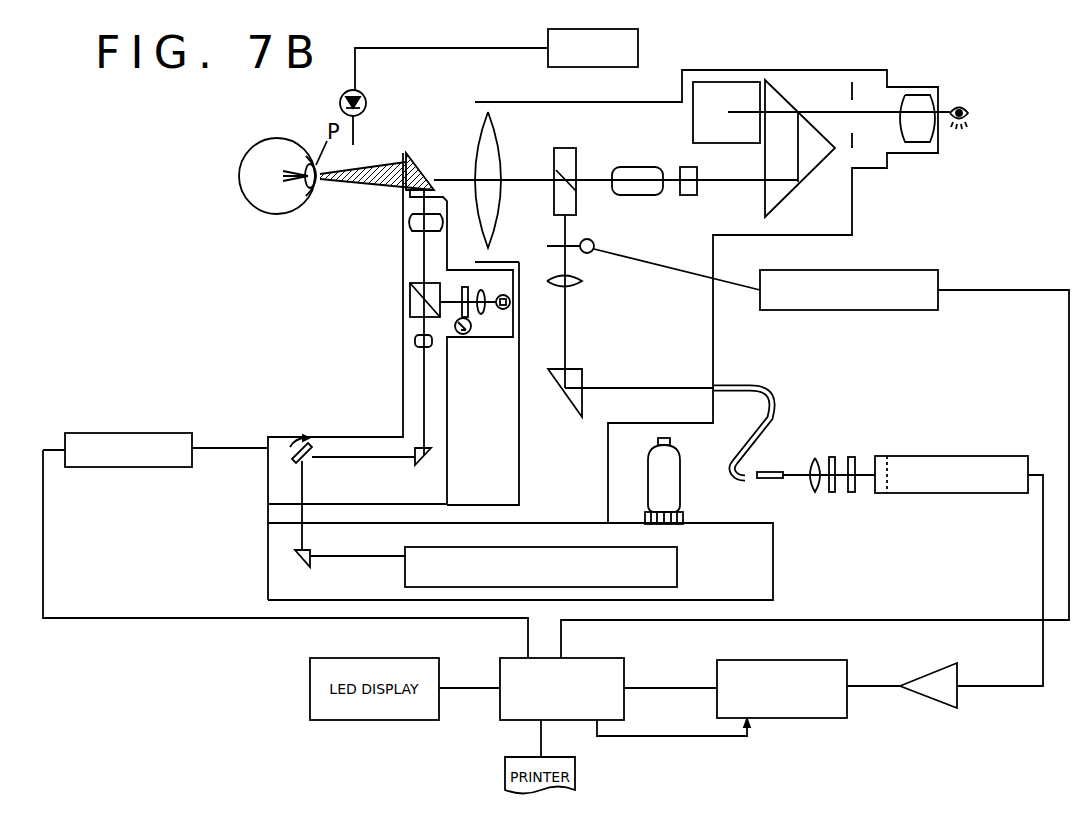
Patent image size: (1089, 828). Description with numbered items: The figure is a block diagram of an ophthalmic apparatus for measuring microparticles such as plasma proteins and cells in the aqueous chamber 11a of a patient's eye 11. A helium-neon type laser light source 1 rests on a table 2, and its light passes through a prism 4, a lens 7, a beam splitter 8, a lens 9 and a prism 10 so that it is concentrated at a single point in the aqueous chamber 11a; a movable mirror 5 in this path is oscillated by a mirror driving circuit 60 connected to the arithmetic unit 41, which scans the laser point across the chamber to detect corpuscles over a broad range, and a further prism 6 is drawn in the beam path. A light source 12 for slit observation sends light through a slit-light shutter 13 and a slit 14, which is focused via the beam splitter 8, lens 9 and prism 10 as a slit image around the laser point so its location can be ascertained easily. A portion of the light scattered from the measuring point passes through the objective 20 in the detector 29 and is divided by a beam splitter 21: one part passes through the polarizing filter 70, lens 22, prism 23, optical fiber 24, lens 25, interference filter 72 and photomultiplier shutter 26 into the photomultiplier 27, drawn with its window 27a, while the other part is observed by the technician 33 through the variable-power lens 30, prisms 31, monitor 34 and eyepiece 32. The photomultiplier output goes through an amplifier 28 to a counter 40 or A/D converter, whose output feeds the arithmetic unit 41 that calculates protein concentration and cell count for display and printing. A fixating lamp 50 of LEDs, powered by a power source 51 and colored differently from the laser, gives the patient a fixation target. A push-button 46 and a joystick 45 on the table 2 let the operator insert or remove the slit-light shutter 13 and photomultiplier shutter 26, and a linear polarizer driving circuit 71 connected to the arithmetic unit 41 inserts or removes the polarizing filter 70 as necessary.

The laser light source 1 is at (678, 566).
The table 2 is at (773, 558).
The prism 4 is at (295, 553).
The movable mirror 5 is at (290, 458).
The prism 6 is at (432, 450).
The lens 7 is at (415, 340).
The beam splitter 8 is at (410, 297).
The lens 9 is at (411, 226).
The prism 10 is at (420, 172).
The patient's eye 11 is at (272, 141).
The aqueous chamber 11a is at (313, 192).
The light source for slit observation 12 is at (503, 312).
The slit-light shutter 13 is at (455, 332).
The slit 14 is at (460, 285).
The objective 20 is at (497, 157).
The beam splitter 21 is at (580, 197).
The lens 22 is at (582, 282).
The prism 23 is at (583, 372).
The optical fiber 24 is at (775, 400).
The lens 25 is at (814, 459).
The photomultiplier shutter 26 is at (856, 487).
The photomultiplier 27 is at (942, 456).
The photomultiplier window 27a is at (880, 456).
The amplifier 28 is at (928, 672).
The detector 29 is at (762, 70).
The variable-power lens 30 is at (623, 167).
The prisms 31 is at (813, 170).
The eyepiece 32 is at (912, 143).
The technician 33 is at (962, 106).
The monitor 34 is at (712, 144).
The counter 40 is at (732, 660).
The arithmetic unit 41 is at (578, 658).
The joystick 45 is at (681, 490).
The push-button 46 is at (657, 440).
The fixating lamp 50 is at (362, 93).
The power source 51 is at (640, 48).
The mirror driving circuit 60 is at (122, 433).
The polarizing filter 70 is at (594, 243).
The linear polarizer driving circuit 71 is at (890, 270).
The interference filter 72 is at (831, 493).